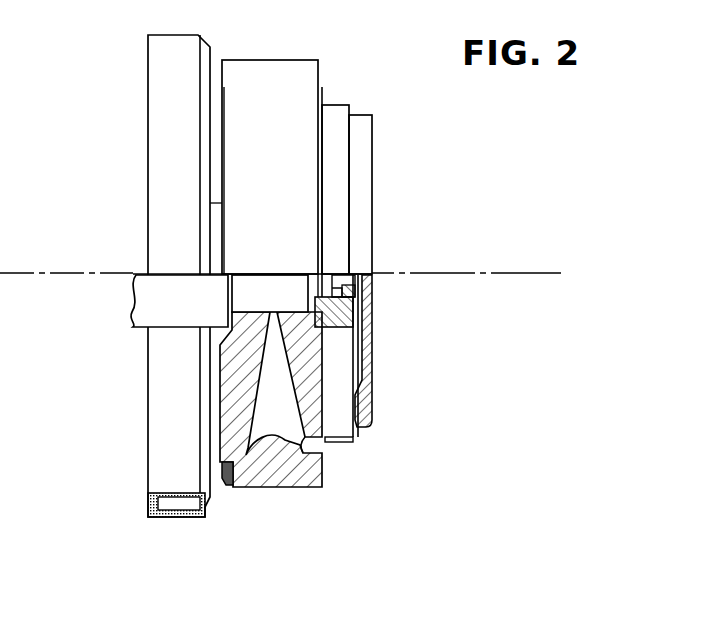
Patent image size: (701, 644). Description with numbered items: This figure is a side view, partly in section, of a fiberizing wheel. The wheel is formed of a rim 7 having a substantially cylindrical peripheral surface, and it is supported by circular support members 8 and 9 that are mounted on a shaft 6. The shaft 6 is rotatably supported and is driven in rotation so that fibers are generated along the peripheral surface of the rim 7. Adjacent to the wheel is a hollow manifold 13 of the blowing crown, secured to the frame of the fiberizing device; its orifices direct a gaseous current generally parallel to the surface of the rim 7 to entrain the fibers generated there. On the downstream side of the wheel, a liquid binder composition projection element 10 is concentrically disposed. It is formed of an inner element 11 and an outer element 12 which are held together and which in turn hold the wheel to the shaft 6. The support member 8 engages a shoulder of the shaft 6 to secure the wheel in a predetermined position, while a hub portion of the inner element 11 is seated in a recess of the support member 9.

The shaft 6 is at (145, 312).
The rim 7 is at (282, 488).
The circular support member 8 is at (226, 491).
The circular support member 9 is at (324, 449).
The liquid binder composition projection element 10 is at (362, 203).
The inner element 11 is at (372, 428).
The outer element 12 is at (375, 364).
The hollow manifold 13 is at (170, 518).